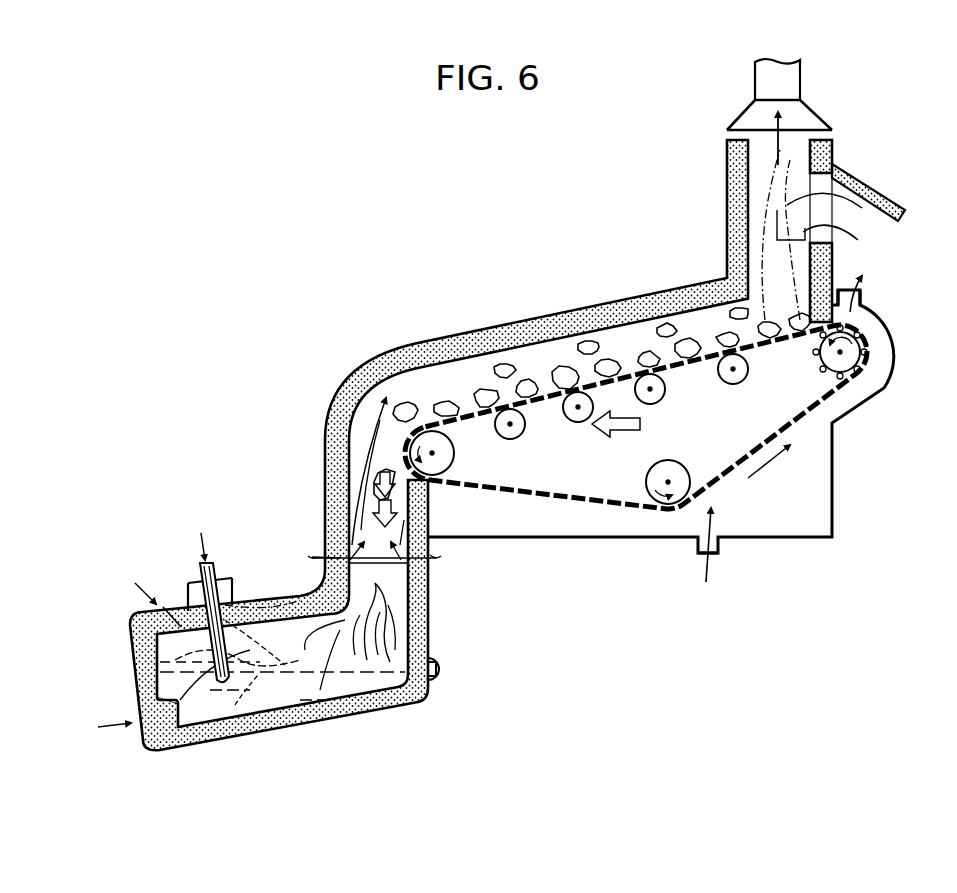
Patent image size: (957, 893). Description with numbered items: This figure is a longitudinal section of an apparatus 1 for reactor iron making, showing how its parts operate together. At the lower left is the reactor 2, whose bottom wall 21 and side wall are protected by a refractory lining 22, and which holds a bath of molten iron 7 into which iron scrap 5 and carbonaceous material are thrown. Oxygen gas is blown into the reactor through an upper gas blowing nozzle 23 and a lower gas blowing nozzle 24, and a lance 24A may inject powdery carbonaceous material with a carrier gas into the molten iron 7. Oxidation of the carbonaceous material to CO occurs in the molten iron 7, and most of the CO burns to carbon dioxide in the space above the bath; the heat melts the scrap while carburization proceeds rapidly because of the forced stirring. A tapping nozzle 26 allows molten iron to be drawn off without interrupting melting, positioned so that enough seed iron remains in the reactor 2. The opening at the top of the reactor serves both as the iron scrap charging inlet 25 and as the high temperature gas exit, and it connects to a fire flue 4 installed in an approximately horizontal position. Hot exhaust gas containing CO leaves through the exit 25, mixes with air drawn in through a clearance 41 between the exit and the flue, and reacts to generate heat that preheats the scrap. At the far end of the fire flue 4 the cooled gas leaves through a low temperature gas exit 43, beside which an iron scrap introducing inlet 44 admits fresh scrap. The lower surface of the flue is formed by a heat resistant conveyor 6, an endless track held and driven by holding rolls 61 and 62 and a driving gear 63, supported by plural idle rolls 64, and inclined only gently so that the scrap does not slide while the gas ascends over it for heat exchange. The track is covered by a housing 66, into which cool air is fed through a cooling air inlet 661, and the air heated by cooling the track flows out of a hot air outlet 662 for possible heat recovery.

The combustion apparatus 1 is at (497, 300).
The reactor 2 is at (296, 643).
The fire flue 4 is at (578, 340).
The iron scrap 5 is at (541, 378).
The heat resistant conveyor 6 is at (636, 417).
The molten iron 7 is at (300, 693).
The bottom wall 21 is at (273, 737).
The refractory lining 22 is at (343, 727).
The upper gas blowing nozzle 23 is at (137, 723).
The lower gas blowing nozzle 24 is at (141, 604).
The lance 24A is at (200, 566).
The iron scrap charging inlet 25 is at (378, 572).
The tapping nozzle 26 is at (433, 690).
The clearance 41 is at (383, 558).
The low temperature gas exit 43 is at (757, 163).
The iron scrap introducing inlet 44 is at (822, 185).
The holding roll 61 is at (440, 453).
The holding roll 62 is at (658, 469).
The driving gear 63 is at (828, 358).
The idle roll 64 is at (737, 377).
The housing 66 is at (773, 539).
The cooling air inlet 661 is at (694, 554).
The hot air outlet 662 is at (864, 296).